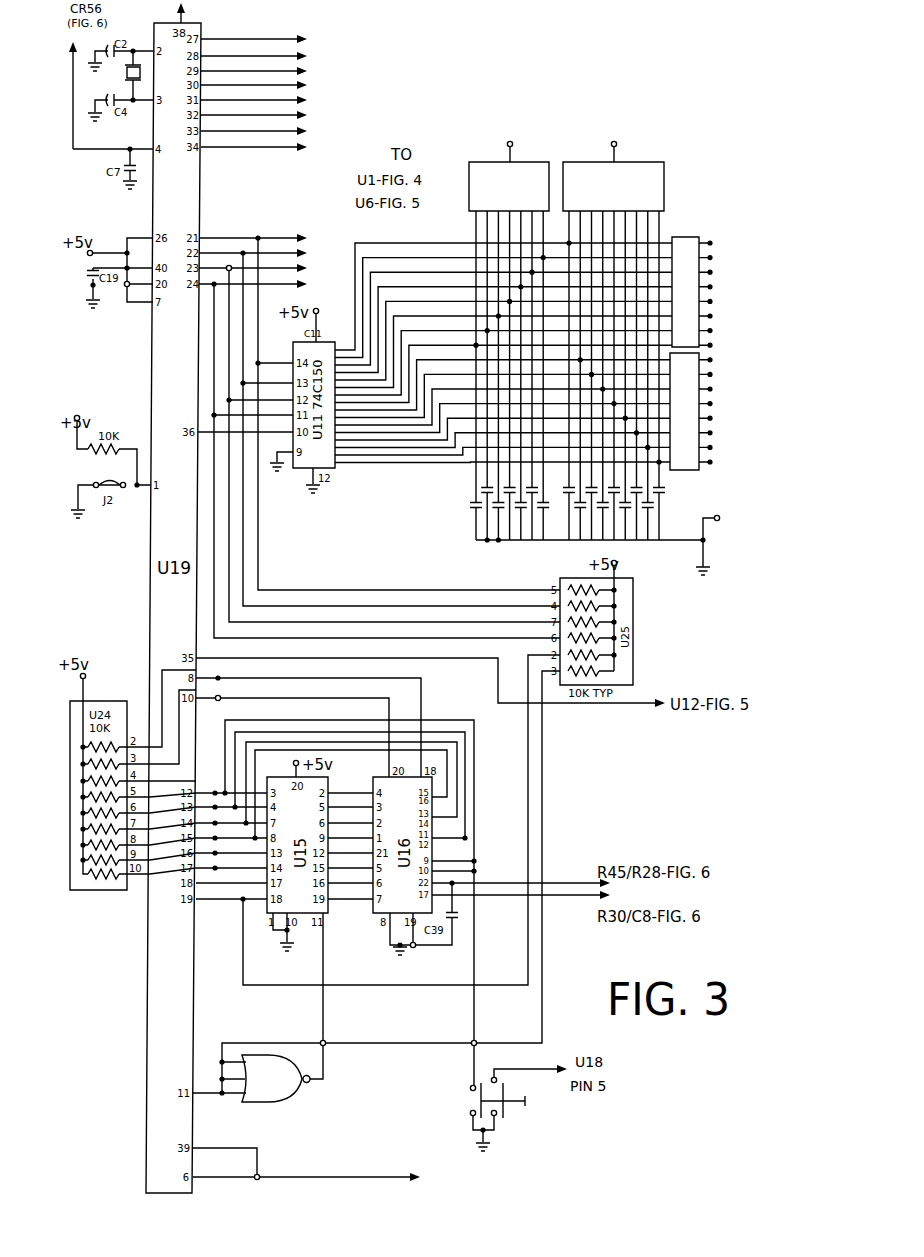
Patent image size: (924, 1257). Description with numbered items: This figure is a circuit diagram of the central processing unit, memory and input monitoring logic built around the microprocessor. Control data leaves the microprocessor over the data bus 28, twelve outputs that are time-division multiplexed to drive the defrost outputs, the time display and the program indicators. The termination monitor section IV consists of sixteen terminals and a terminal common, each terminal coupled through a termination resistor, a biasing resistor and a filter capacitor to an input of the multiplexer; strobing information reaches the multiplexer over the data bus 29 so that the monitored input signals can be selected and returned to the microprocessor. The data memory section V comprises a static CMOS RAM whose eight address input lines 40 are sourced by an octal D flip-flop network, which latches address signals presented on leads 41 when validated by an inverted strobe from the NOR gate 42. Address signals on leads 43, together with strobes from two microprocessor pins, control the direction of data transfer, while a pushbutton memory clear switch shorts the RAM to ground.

The data bus 28 is at (318, 297).
The data bus 29 is at (245, 384).
The address input lines 40 is at (349, 916).
The leads 41 is at (224, 910).
The NOR gate 42 is at (285, 1101).
The leads 43 is at (216, 762).
The termination monitor section IV is at (438, 516).
The data memory section V is at (563, 1140).